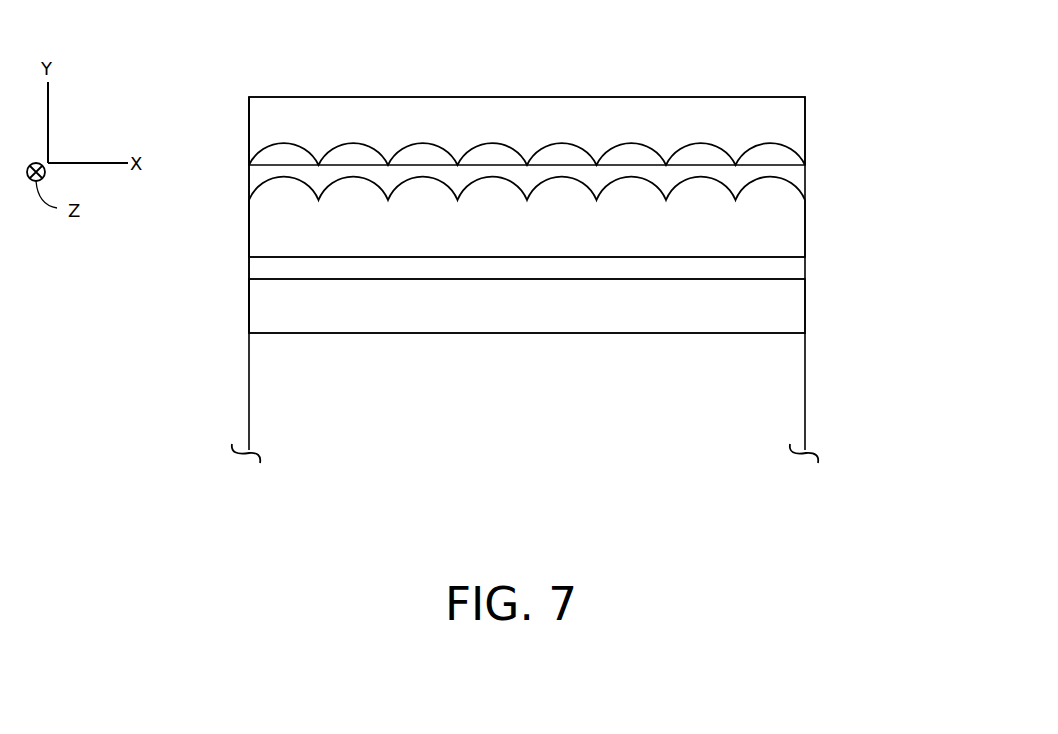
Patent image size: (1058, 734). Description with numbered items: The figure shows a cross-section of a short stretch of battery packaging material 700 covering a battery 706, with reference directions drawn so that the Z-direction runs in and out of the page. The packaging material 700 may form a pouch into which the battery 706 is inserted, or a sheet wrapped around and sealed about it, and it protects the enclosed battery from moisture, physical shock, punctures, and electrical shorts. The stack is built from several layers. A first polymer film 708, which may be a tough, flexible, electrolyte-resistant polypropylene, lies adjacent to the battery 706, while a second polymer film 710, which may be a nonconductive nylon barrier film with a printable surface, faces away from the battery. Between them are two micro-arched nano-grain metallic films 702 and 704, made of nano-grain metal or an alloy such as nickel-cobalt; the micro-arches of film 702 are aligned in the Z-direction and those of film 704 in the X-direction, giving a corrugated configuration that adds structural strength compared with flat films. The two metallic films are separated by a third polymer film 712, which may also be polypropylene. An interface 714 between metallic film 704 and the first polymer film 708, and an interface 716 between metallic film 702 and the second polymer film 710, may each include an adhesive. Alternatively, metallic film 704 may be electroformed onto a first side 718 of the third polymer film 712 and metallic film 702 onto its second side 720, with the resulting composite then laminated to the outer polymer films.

The battery packaging material 700 is at (827, 46).
The micro-arched nano-grain metallic film 702 is at (249, 180).
The micro-arched nano-grain metallic film 704 is at (249, 267).
The battery 706 is at (525, 398).
The first polymer film 708 is at (527, 306).
The second polymer film 710 is at (527, 131).
The third polymer film 712 is at (527, 228).
The interface 714 is at (487, 280).
The interface 716 is at (488, 143).
The first side 718 is at (783, 257).
The second side 720 is at (788, 179).